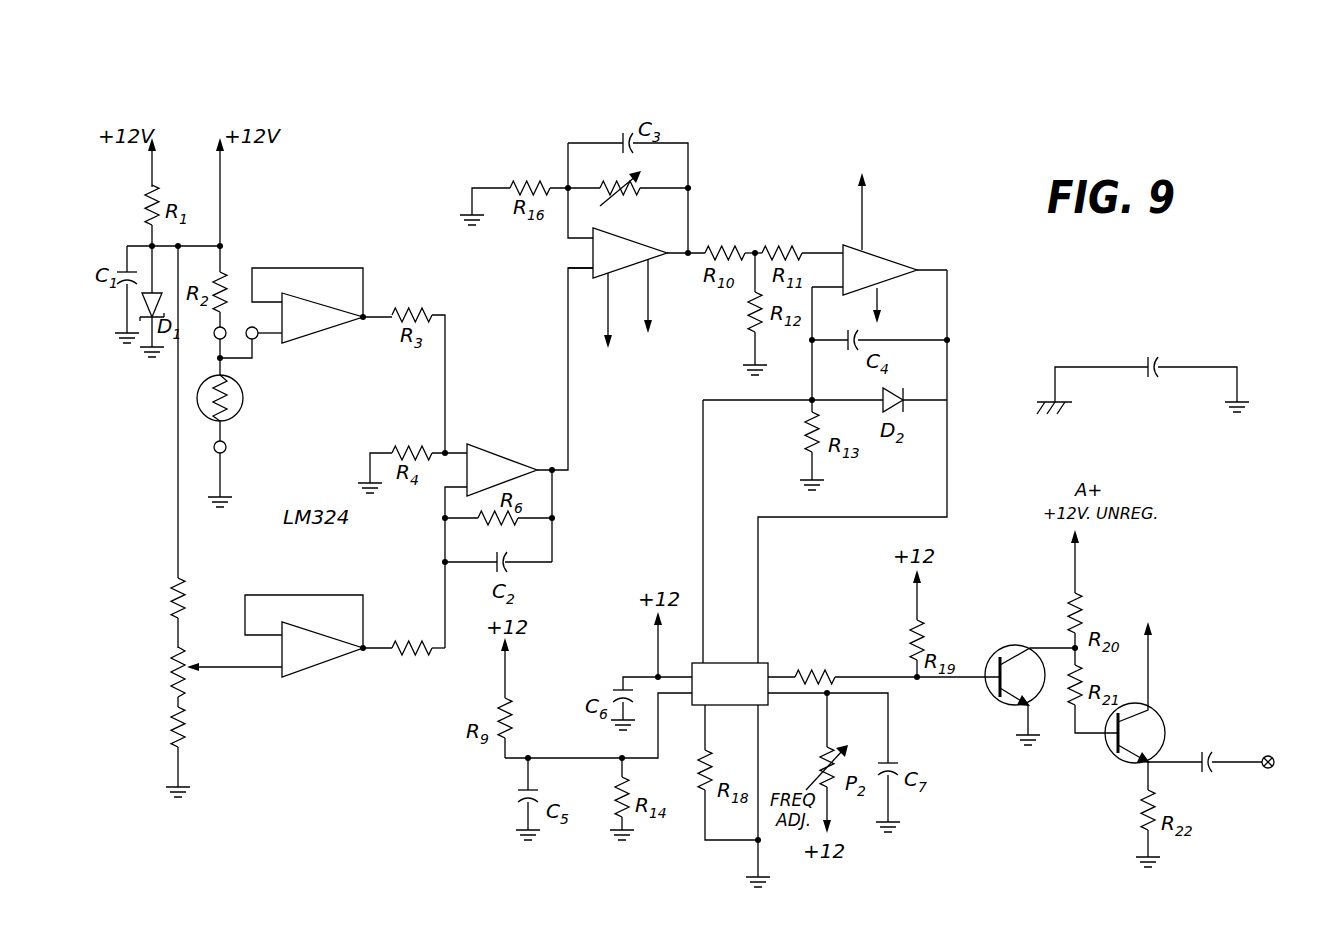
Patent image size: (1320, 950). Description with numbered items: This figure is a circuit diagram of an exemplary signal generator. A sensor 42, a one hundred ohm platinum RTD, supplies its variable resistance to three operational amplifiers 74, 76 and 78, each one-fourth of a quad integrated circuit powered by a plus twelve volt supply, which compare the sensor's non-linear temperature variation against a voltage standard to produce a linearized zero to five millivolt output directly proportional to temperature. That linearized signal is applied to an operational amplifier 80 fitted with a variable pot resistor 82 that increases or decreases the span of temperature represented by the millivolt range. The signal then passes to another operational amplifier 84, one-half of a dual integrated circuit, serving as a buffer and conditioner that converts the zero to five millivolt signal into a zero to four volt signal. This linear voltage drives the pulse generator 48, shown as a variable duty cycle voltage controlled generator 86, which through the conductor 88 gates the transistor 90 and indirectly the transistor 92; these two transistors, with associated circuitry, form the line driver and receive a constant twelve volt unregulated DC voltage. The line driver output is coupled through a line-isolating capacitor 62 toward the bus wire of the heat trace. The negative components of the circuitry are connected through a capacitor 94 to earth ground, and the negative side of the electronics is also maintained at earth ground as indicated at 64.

The sensor 42 is at (238, 412).
The pulse generator 48 is at (290, 721).
The line-isolating capacitor 62 is at (1204, 753).
The earth ground 64 is at (1090, 366).
The operational amplifier 74 is at (328, 323).
The operational amplifier 76 is at (311, 656).
The operational amplifier 78 is at (514, 465).
The operational amplifier 80 is at (627, 242).
The variable pot resistor 82 is at (660, 178).
The operational amplifier 84 is at (880, 258).
The variable duty cycle voltage controlled generator 86 is at (733, 663).
The conductor 88 is at (866, 677).
The transistor 90 is at (996, 701).
The transistor 92 is at (1118, 758).
The capacitor 94 is at (1152, 356).